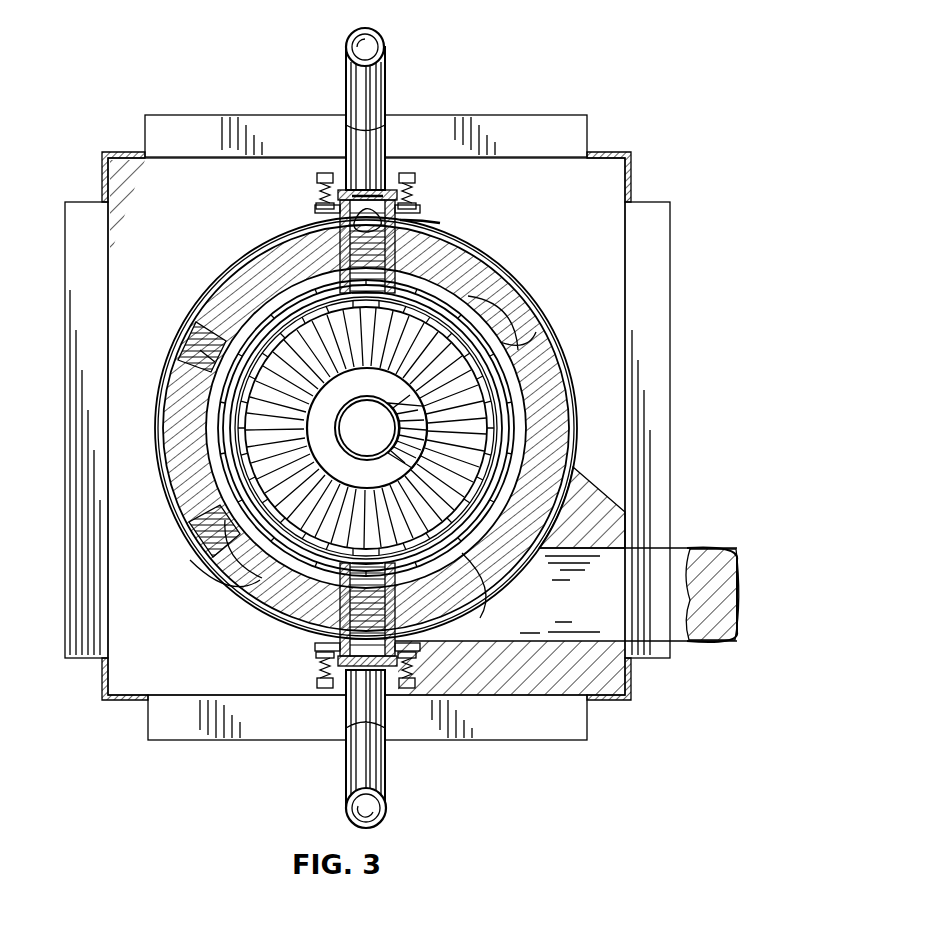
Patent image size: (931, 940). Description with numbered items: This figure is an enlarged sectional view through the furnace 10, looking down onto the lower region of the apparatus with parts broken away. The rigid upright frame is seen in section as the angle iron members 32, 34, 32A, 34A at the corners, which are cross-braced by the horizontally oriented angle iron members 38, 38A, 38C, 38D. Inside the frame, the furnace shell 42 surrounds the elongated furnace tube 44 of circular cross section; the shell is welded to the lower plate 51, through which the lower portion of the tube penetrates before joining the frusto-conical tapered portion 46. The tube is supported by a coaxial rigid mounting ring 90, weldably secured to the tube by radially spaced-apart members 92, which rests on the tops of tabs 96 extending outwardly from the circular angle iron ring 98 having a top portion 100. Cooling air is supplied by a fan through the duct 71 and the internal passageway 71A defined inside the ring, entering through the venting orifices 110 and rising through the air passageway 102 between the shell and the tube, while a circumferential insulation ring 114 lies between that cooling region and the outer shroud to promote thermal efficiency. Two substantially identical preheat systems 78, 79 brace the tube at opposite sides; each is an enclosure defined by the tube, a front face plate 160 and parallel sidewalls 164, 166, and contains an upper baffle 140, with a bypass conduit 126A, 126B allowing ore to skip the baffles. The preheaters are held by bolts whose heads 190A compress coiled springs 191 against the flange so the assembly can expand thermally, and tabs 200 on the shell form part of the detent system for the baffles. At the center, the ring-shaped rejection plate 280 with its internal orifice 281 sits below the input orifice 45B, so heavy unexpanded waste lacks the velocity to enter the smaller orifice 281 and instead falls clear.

The furnace 10 is at (620, 138).
The angle iron member 32 is at (632, 680).
The angle iron member 32A is at (632, 168).
The angle iron member 34 is at (104, 700).
The angle iron member 34A is at (108, 155).
The horizontally oriented angle iron member 38 is at (510, 710).
The horizontally oriented angle iron member 38A is at (498, 150).
The horizontally oriented angle iron member 38C is at (655, 238).
The horizontally oriented angle iron member 38D is at (70, 442).
The furnace shell 42 is at (525, 292).
The furnace tube 44 is at (408, 478).
The input orifice 45B is at (404, 458).
The frusto-conical tapered portion 46 is at (460, 512).
The lower plate 51 is at (200, 224).
The duct 71 is at (668, 566).
The internal passageway 71A is at (736, 586).
The preheat system 78 is at (318, 666).
The preheat system 79 is at (417, 207).
The mounting ring 90 is at (528, 362).
The radially spaced-apart members 92 is at (262, 305).
The tabs 96 is at (536, 398).
The angle iron ring 98 is at (186, 361).
The top portion 100 is at (192, 340).
The air passageway 102 is at (510, 328).
The venting orifices 110 is at (208, 402).
The insulation ring 114 is at (284, 262).
The preheater bypass conduit 126A is at (347, 48).
The preheater bypass conduit 126B is at (388, 810).
The upper baffle 140 is at (364, 188).
The front face plate 160 is at (372, 190).
The sidewall 164 is at (428, 222).
The sidewall 166 is at (333, 242).
The head 190A is at (418, 184).
The coiled spring 191 is at (318, 200).
The tabs 200 is at (396, 190).
The rejection plate 280 is at (378, 414).
The internal orifice 281 is at (400, 406).